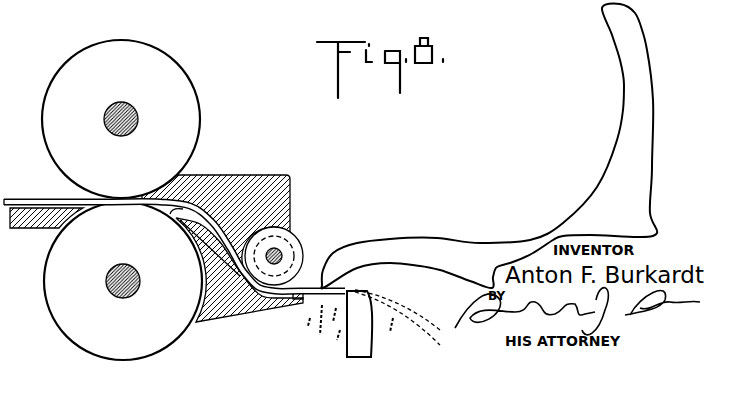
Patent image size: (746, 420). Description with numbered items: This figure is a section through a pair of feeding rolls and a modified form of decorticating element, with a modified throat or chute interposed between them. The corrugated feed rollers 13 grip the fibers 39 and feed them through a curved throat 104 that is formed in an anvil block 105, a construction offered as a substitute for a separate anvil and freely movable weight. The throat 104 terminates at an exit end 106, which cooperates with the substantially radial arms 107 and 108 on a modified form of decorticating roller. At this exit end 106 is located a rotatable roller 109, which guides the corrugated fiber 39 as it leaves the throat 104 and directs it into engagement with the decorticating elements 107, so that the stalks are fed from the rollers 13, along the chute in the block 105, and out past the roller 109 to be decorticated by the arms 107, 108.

The corrugated feed rollers 13 is at (178, 95).
The fibers 39 is at (44, 199).
The curved throat 104 is at (176, 211).
The anvil block 105 is at (257, 182).
The exit end of the throat 106 is at (302, 299).
The substantially radial arms 107 is at (350, 262).
The substantially radial arms 108 is at (367, 340).
The rotatable roller 109 is at (292, 250).